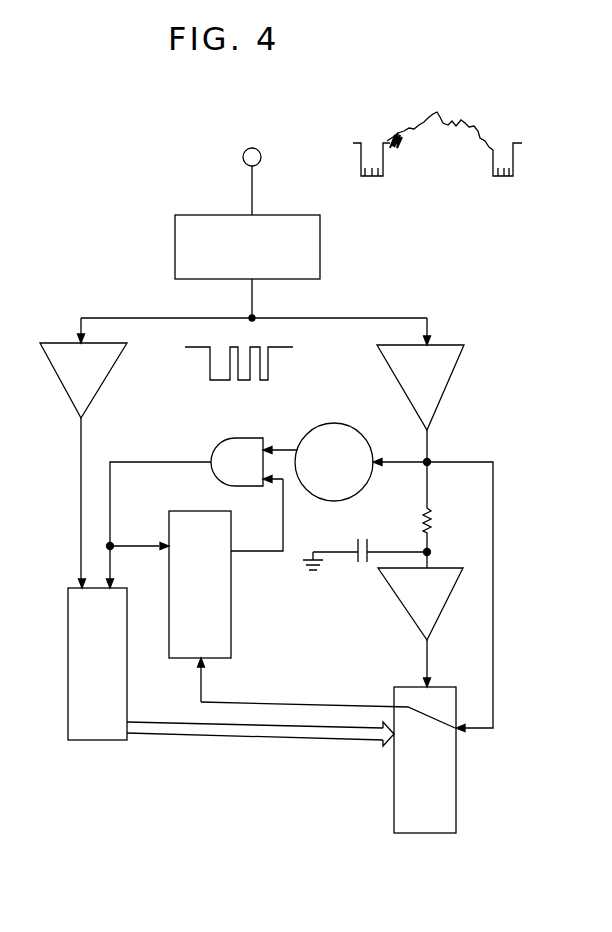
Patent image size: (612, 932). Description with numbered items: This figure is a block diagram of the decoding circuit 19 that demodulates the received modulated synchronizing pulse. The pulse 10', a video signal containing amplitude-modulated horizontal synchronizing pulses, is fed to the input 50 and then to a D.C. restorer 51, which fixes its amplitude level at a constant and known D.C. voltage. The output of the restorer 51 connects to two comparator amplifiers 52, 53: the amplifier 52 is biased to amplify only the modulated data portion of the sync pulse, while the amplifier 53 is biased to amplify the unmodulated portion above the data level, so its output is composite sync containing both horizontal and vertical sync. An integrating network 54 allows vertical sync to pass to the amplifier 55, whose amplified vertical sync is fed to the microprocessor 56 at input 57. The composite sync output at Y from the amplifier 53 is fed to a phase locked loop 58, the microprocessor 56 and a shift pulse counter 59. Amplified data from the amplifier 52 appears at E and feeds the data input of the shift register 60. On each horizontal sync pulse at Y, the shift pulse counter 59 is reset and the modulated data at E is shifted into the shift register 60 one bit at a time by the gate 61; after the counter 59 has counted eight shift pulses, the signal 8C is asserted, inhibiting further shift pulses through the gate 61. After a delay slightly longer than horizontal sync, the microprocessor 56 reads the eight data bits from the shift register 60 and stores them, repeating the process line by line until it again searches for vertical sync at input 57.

The pulse 10' is at (437, 123).
The decoding circuit 19 is at (510, 618).
The input 50 is at (243, 156).
The D.C. restorer 51 is at (266, 260).
The comparator amplifier 52 is at (95, 378).
The comparator amplifier 53 is at (441, 385).
The integrating network 54 is at (417, 527).
The amplifier 55 is at (441, 613).
The microprocessor 56 is at (439, 782).
The input 57 is at (432, 686).
The phase locked loop 58 is at (348, 476).
The shift pulse counter 59 is at (215, 614).
The shift register 60 is at (111, 664).
The gate 61 is at (249, 477).
The amplified data output E is at (209, 387).
The composite sync output Y is at (437, 442).
The signal 8C is at (244, 568).